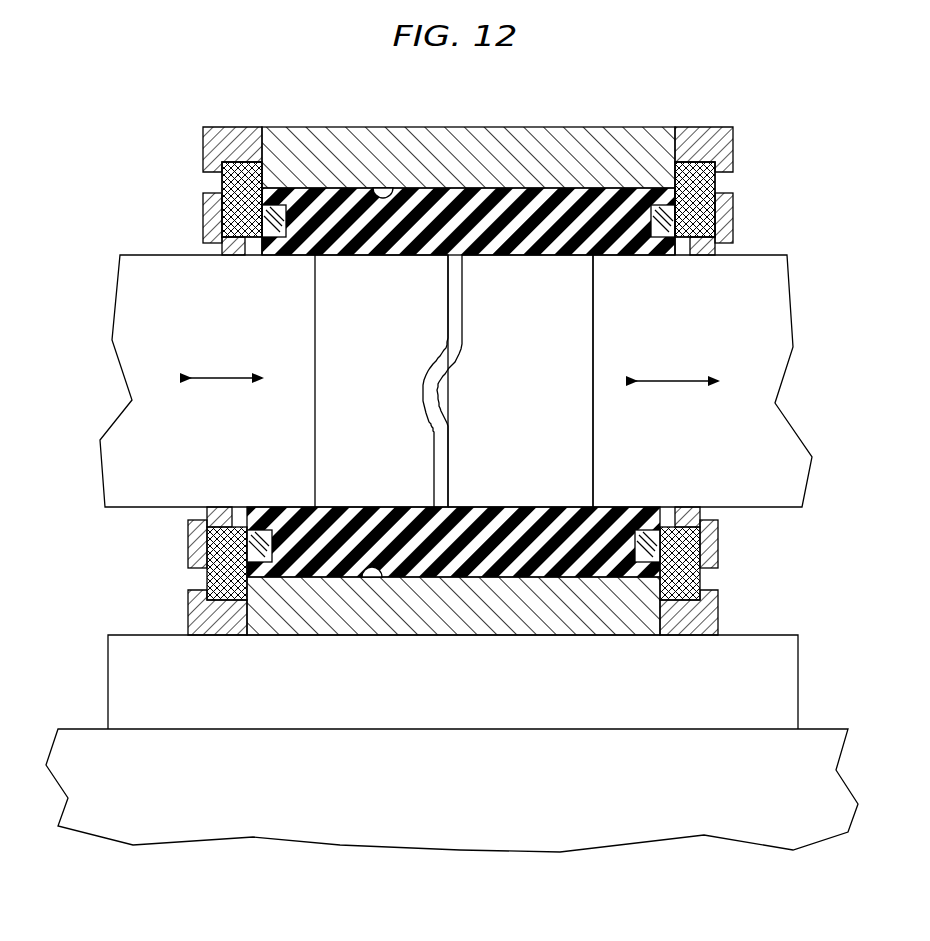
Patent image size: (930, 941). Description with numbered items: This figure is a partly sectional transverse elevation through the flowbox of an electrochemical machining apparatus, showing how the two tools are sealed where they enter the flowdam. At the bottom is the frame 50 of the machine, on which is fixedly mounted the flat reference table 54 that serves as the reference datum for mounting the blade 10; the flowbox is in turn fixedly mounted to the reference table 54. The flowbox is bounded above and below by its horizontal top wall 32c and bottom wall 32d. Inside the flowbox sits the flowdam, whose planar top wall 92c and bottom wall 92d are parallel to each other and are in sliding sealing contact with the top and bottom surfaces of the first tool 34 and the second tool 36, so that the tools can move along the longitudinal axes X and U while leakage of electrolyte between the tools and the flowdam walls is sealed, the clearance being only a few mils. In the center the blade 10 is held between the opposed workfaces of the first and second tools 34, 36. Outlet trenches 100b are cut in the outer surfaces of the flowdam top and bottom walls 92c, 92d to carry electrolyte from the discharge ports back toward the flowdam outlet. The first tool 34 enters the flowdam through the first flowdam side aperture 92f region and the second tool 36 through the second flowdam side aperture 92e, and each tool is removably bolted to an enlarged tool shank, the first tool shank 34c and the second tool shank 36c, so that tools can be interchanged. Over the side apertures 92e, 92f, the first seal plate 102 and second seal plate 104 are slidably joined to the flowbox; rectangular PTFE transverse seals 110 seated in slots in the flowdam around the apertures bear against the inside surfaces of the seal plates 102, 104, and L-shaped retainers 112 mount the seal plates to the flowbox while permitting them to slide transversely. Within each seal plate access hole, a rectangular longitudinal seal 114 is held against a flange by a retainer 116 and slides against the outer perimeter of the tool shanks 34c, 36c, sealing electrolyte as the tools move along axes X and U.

The blade 10 is at (447, 387).
The top wall 32c is at (575, 140).
The bottom wall 32d is at (622, 627).
The first tool 34 is at (344, 445).
The first tool shank 34c is at (200, 459).
The second tool 36 is at (530, 445).
The second tool shank 36c is at (719, 464).
The frame 50 is at (468, 800).
The reference table 54 is at (798, 686).
The flowdam top wall 92c is at (495, 197).
The flowdam bottom wall 92d is at (510, 580).
The first flowdam side aperture 92e is at (653, 257).
The second flowdam side aperture 92f is at (273, 257).
The outlet trenches 100b is at (392, 195).
The first seal plate 102 is at (243, 162).
The second seal plate 104 is at (692, 163).
The transverse seals 110 is at (218, 180).
The L-shaped retainers 112 is at (203, 147).
The longitudinal seals 114 is at (218, 250).
The retainers 116 is at (203, 210).
The first longitudinal axis X is at (215, 378).
The second longitudinal axis U is at (686, 381).